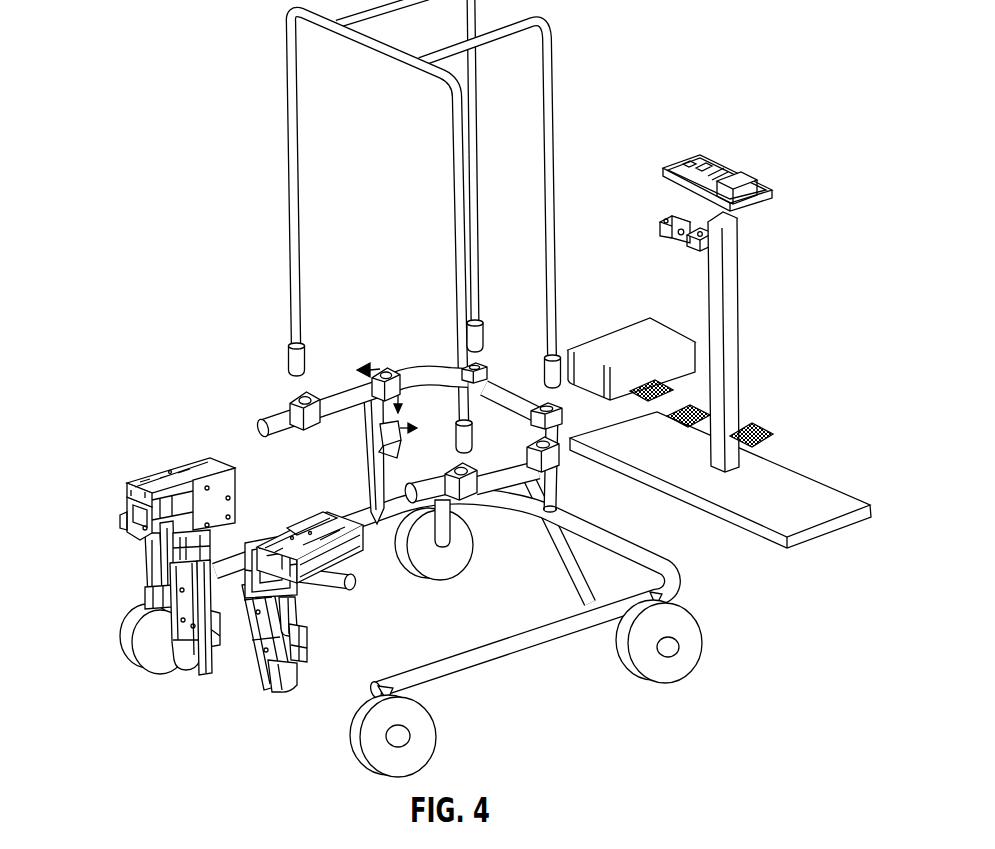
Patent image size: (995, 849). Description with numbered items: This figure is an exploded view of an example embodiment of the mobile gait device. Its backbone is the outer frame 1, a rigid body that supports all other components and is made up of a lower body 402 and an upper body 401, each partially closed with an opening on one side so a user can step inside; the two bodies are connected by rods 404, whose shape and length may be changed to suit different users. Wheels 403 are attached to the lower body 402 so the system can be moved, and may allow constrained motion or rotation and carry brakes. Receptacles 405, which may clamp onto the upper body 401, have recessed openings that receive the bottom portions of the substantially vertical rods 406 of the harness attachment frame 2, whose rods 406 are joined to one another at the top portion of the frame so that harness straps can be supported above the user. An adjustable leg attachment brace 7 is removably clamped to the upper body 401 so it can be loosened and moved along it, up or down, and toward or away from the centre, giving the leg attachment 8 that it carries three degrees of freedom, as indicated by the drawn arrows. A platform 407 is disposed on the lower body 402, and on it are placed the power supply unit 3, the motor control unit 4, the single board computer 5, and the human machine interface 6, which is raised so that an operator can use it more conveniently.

The outer frame 1 is at (500, 597).
The harness attachment frame 2 is at (388, 226).
The power supply unit 3 is at (625, 312).
The motor control unit 4 is at (777, 420).
The single board computer 5 is at (703, 405).
The human machine interface 6 is at (745, 163).
The adjustable leg attachment brace 7 is at (377, 353).
The leg attachment 8 is at (160, 467).
The upper body 401 is at (330, 394).
The lower body 402 is at (517, 633).
The wheels 403 is at (690, 648).
The rods 404 is at (565, 560).
The receptacles 405 is at (318, 418).
The vertical rods 406 is at (296, 158).
The platform 407 is at (833, 525).